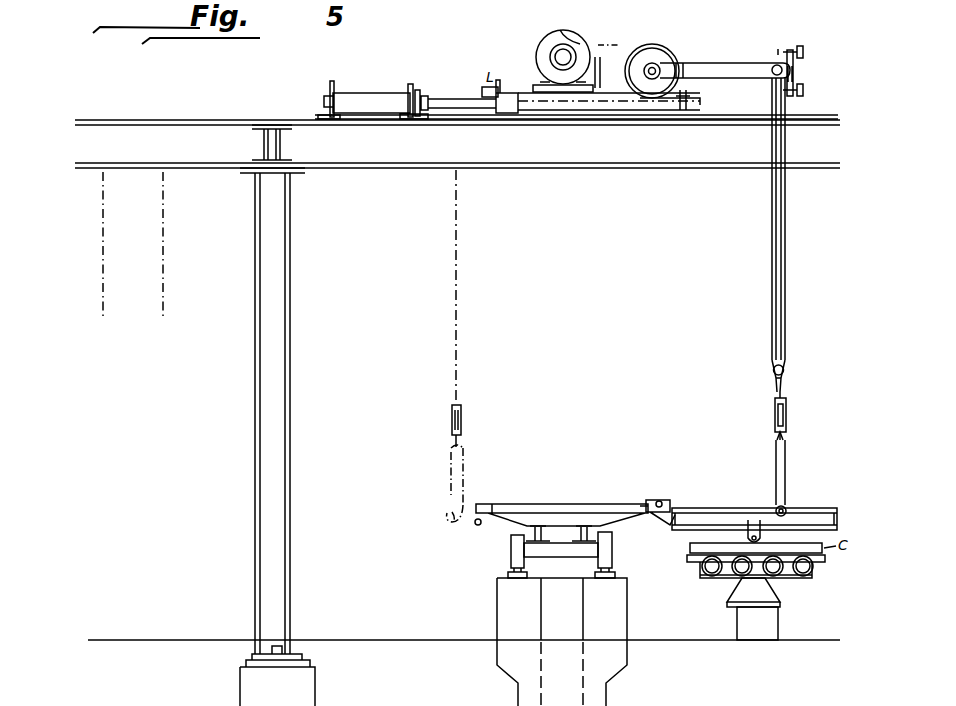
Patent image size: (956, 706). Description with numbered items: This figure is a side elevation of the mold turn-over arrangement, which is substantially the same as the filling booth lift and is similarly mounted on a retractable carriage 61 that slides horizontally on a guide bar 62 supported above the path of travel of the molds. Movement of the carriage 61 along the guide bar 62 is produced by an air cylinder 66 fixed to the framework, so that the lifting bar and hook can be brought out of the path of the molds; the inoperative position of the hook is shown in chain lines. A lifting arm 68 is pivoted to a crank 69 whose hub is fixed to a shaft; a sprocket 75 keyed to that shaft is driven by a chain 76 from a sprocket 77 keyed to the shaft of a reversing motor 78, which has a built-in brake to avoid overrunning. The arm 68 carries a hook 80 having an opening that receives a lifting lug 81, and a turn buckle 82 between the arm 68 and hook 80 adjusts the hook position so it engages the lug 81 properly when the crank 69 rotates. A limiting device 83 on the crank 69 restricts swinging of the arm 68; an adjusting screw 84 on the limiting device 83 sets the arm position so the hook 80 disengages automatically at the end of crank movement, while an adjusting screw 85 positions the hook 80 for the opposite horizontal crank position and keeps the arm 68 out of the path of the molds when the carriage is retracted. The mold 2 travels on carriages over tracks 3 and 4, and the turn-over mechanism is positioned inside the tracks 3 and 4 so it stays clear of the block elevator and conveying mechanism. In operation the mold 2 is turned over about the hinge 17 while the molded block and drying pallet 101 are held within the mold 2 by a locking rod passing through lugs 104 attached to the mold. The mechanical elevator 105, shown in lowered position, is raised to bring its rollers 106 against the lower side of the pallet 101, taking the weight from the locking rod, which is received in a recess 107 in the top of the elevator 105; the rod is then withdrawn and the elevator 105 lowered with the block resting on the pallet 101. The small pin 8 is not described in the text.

The air cylinder 66 is at (372, 92).
The guide bar 62 is at (476, 97).
The carriage 61 is at (508, 84).
The sprocket 77 is at (545, 55).
The motor 78 is at (575, 36).
The chain 76 is at (620, 43).
The sprocket 75 is at (673, 48).
The crank 69 is at (717, 67).
The limiting device 83 is at (795, 82).
The adjusting screw 85 is at (805, 52).
The adjusting screw 84 is at (804, 92).
The lifting arm 68 is at (782, 270).
The turn buckle 82 is at (784, 420).
The hook 80 is at (786, 479).
The lifting lug 81 is at (786, 507).
The pin 8 is at (492, 514).
The track 3 is at (513, 575).
The track 4 is at (606, 572).
The hinge 17 is at (663, 500).
The mold 2 is at (836, 518).
The lug 104 is at (754, 521).
The drying pallet 101 is at (826, 557).
The roller 106 is at (812, 572).
The recess 107 is at (742, 580).
The mechanical elevator 105 is at (780, 616).